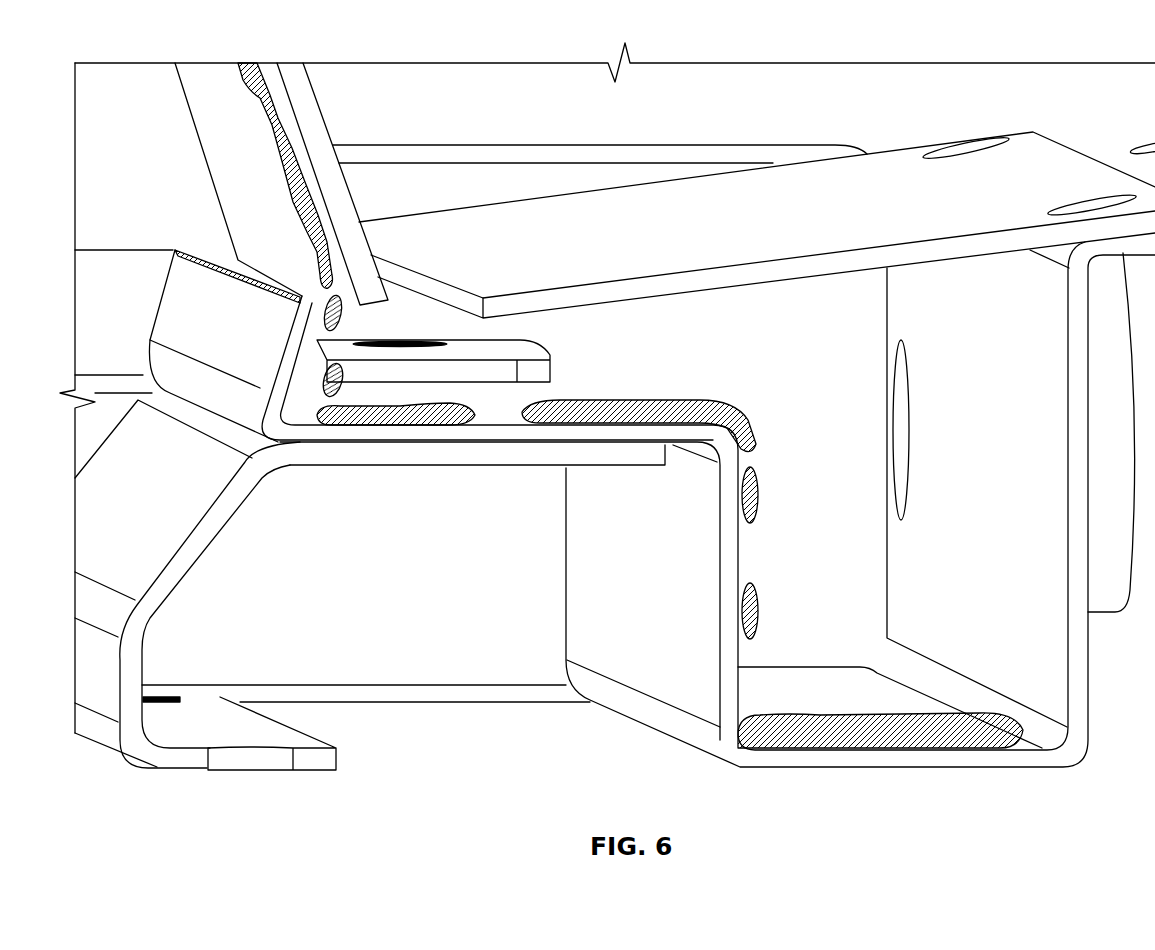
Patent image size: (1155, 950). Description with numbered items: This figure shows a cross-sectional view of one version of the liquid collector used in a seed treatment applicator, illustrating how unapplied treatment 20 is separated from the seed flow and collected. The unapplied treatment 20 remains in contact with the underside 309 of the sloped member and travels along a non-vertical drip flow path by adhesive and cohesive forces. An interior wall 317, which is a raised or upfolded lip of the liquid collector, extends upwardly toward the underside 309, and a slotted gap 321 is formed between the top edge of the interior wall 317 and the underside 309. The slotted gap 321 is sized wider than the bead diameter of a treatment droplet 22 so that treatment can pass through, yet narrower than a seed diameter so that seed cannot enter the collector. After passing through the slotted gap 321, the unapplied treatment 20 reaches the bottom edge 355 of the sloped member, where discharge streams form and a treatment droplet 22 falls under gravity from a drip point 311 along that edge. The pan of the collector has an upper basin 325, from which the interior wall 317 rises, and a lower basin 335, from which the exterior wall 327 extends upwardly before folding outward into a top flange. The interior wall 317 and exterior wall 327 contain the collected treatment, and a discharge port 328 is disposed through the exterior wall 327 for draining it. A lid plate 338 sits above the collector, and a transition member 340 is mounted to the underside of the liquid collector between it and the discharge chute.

The unapplied treatment 20 is at (287, 142).
The treatment droplet 22 is at (327, 323).
The underside of the sloped member 309 is at (268, 190).
The drip point 311 is at (339, 297).
The interior wall 317 is at (212, 336).
The slotted gap 321 is at (313, 297).
The upper basin 325 is at (525, 419).
The exterior wall 327 is at (977, 657).
The discharge port 328 is at (900, 440).
The lower basin 335 is at (811, 699).
The plate 338 is at (644, 254).
The transition member 340 is at (167, 499).
The bottom edge of the sloped member 355 is at (287, 273).